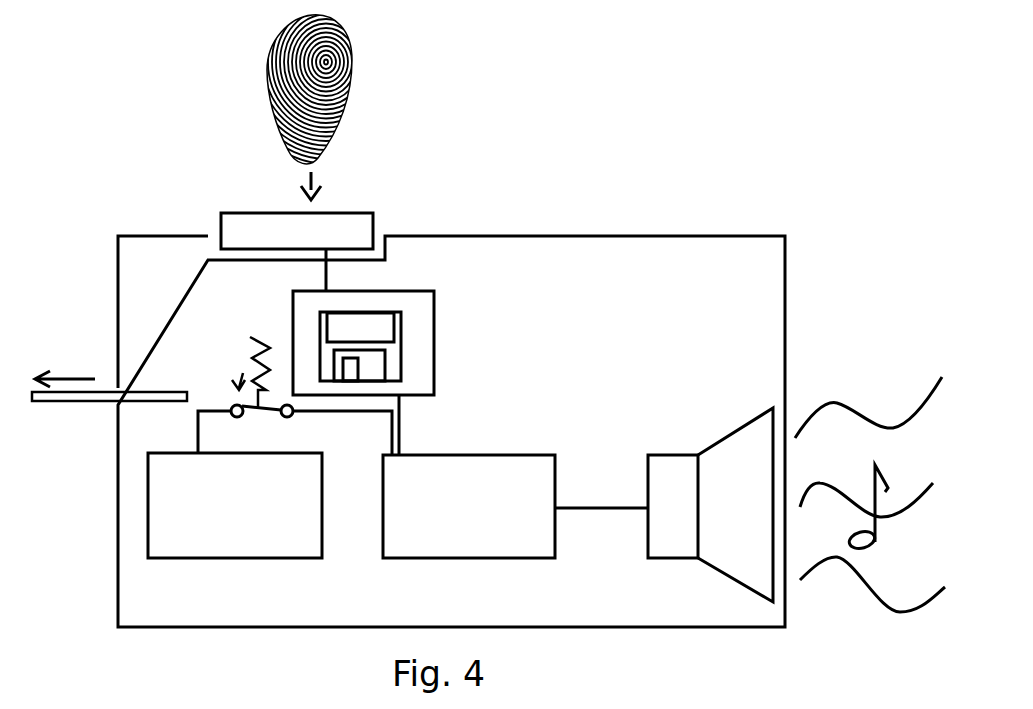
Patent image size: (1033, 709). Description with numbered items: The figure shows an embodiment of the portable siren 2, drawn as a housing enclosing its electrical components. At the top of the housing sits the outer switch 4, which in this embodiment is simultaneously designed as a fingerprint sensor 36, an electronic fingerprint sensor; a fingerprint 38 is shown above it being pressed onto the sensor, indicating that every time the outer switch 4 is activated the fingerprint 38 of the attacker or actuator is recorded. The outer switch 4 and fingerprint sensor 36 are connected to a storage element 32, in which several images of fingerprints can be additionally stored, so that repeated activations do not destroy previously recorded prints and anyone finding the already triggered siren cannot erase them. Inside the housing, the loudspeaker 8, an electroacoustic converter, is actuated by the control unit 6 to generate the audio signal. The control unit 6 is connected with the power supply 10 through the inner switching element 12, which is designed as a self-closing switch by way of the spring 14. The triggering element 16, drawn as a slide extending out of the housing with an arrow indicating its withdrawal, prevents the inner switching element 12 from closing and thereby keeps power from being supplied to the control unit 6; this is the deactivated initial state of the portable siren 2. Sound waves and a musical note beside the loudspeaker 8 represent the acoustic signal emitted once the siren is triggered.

The portable siren 2 is at (505, 218).
The outer switch 4 is at (297, 252).
The fingerprint sensor 36 is at (297, 252).
The control unit 6 is at (515, 506).
The loudspeaker 8 is at (710, 505).
The power supply 10 is at (235, 505).
The inner switching element 12 is at (247, 358).
The spring 14 is at (223, 378).
The triggering element 16 is at (106, 405).
The storage element 32 is at (425, 335).
The fingerprint 38 is at (367, 90).